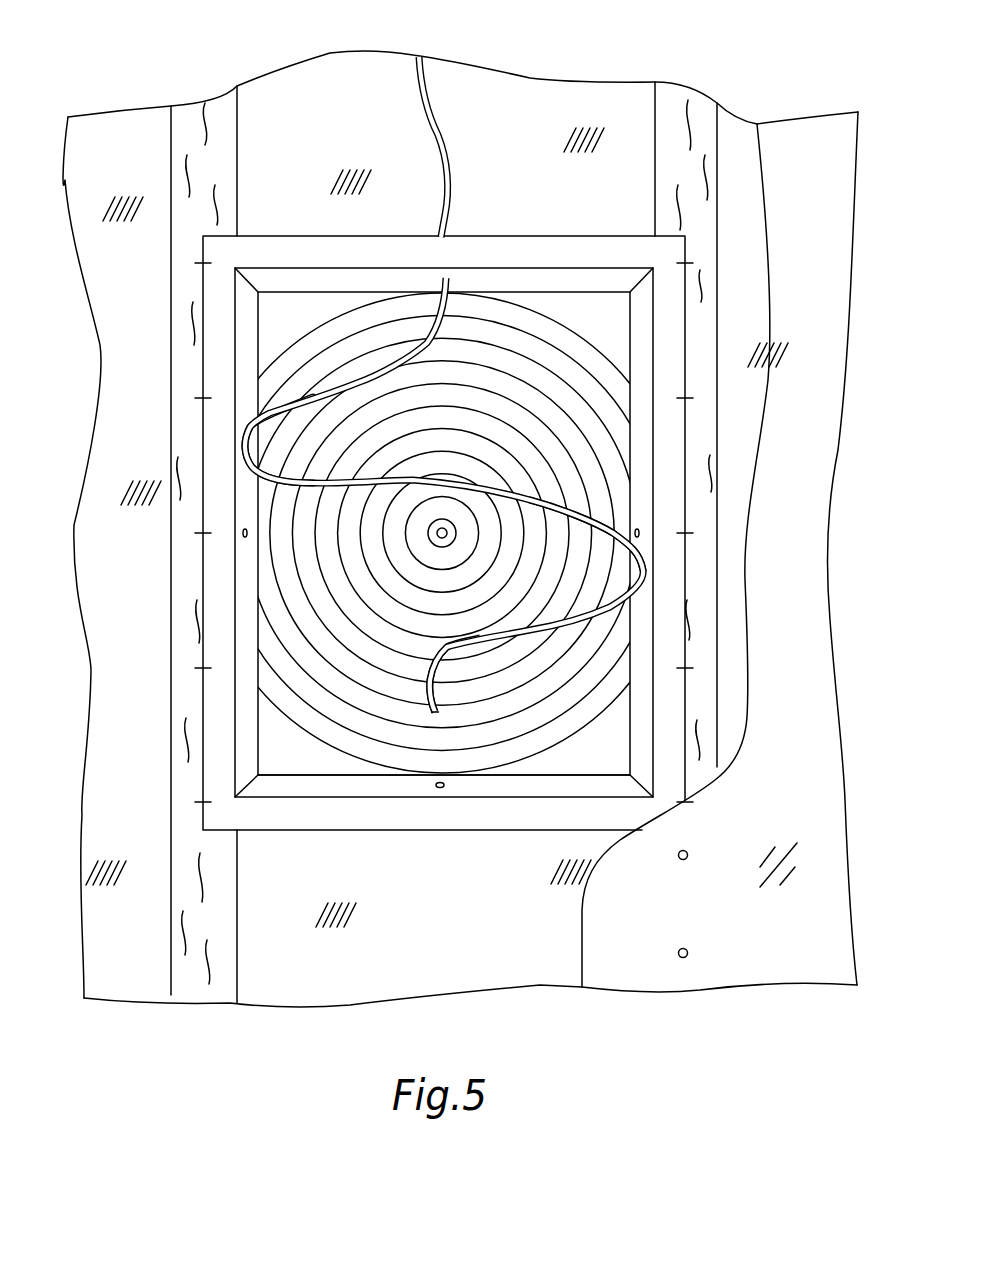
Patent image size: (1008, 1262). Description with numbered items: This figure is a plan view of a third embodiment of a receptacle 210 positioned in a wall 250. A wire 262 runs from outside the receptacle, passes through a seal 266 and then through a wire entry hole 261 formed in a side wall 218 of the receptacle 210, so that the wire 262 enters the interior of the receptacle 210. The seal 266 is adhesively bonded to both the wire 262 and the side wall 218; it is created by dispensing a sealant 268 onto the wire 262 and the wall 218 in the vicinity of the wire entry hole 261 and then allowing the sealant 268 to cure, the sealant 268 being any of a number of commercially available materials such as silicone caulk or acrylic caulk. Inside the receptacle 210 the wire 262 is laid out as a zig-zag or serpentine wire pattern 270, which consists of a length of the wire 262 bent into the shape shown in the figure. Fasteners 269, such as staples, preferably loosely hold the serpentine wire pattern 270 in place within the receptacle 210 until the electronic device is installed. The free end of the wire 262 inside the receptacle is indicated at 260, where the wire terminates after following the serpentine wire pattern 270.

The receptacle 210 is at (432, 765).
The side wall 218 is at (603, 277).
The wall 250 is at (542, 1008).
The cable end 260 is at (443, 693).
The wire entry hole 261 is at (444, 366).
The wire 262 is at (412, 87).
The seal 266 is at (445, 278).
The sealant 268 is at (608, 322).
The fasteners 269 is at (245, 443).
The serpentine wire pattern 270 is at (587, 512).